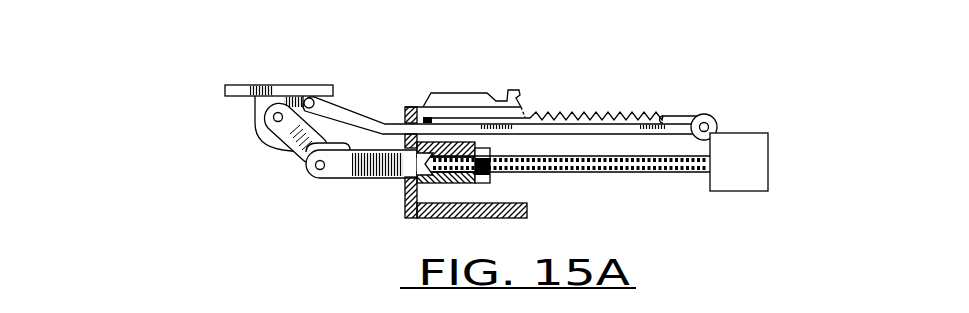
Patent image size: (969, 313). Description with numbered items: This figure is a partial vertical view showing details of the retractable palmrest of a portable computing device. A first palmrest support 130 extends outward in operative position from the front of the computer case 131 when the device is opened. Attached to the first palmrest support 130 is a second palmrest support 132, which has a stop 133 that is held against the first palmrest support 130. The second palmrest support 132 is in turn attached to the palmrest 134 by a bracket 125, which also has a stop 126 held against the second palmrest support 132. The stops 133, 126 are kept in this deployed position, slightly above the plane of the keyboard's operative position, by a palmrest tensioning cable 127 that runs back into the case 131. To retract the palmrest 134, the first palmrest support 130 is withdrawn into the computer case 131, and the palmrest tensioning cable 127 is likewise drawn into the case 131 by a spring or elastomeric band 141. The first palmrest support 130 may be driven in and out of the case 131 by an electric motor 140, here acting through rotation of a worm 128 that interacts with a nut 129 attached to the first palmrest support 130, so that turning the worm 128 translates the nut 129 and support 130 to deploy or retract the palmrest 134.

The bracket 125 is at (255, 120).
The stop 126 is at (298, 97).
The palmrest tensioning cable 127 is at (361, 119).
The worm 128 is at (605, 168).
The nut 129 is at (490, 166).
The first palmrest support 130 is at (350, 179).
The computer case 131 is at (417, 107).
The second palmrest support 132 is at (296, 154).
The stop 133 is at (320, 148).
The palmrest 134 is at (238, 87).
The electric motor 140 is at (757, 160).
The spring or elastomeric band 141 is at (580, 119).